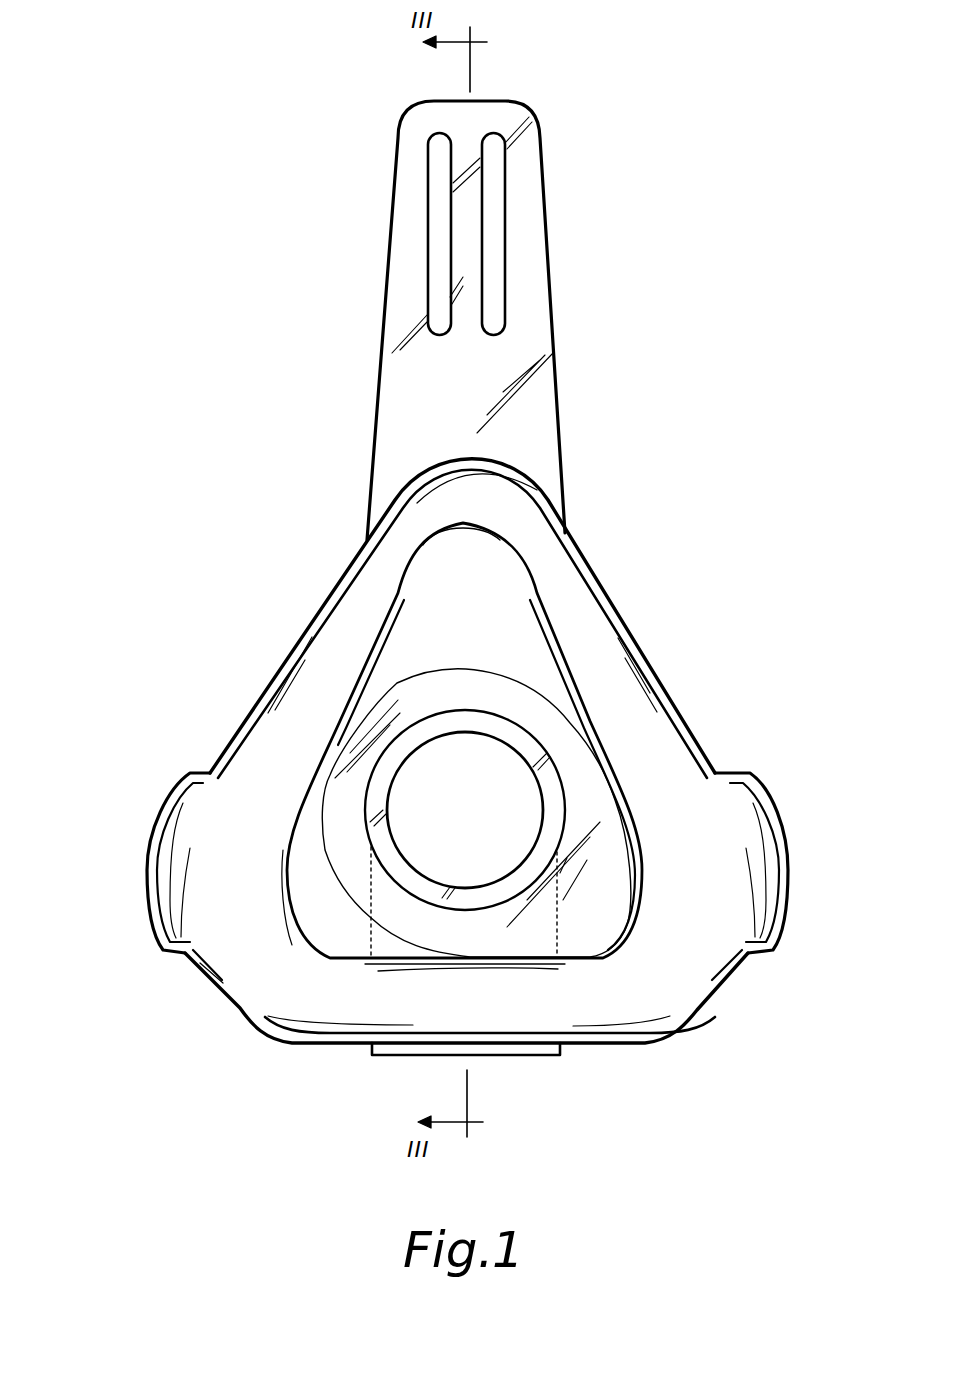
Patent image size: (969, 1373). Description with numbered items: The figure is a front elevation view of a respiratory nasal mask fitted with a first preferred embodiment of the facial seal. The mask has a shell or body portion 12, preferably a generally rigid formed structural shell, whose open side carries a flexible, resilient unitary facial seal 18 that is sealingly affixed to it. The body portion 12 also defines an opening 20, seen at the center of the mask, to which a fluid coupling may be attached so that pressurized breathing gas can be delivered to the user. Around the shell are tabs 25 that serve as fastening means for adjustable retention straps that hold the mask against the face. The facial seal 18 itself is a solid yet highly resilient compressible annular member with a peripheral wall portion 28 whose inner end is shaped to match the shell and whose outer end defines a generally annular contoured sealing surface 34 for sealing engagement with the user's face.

The shell or body portion 12 is at (482, 615).
The facial seal 18 is at (352, 564).
The opening 20 is at (479, 819).
The tabs 25 is at (522, 201).
The peripheral wall portion 28 is at (589, 571).
The contoured sealing surface 34 is at (666, 748).